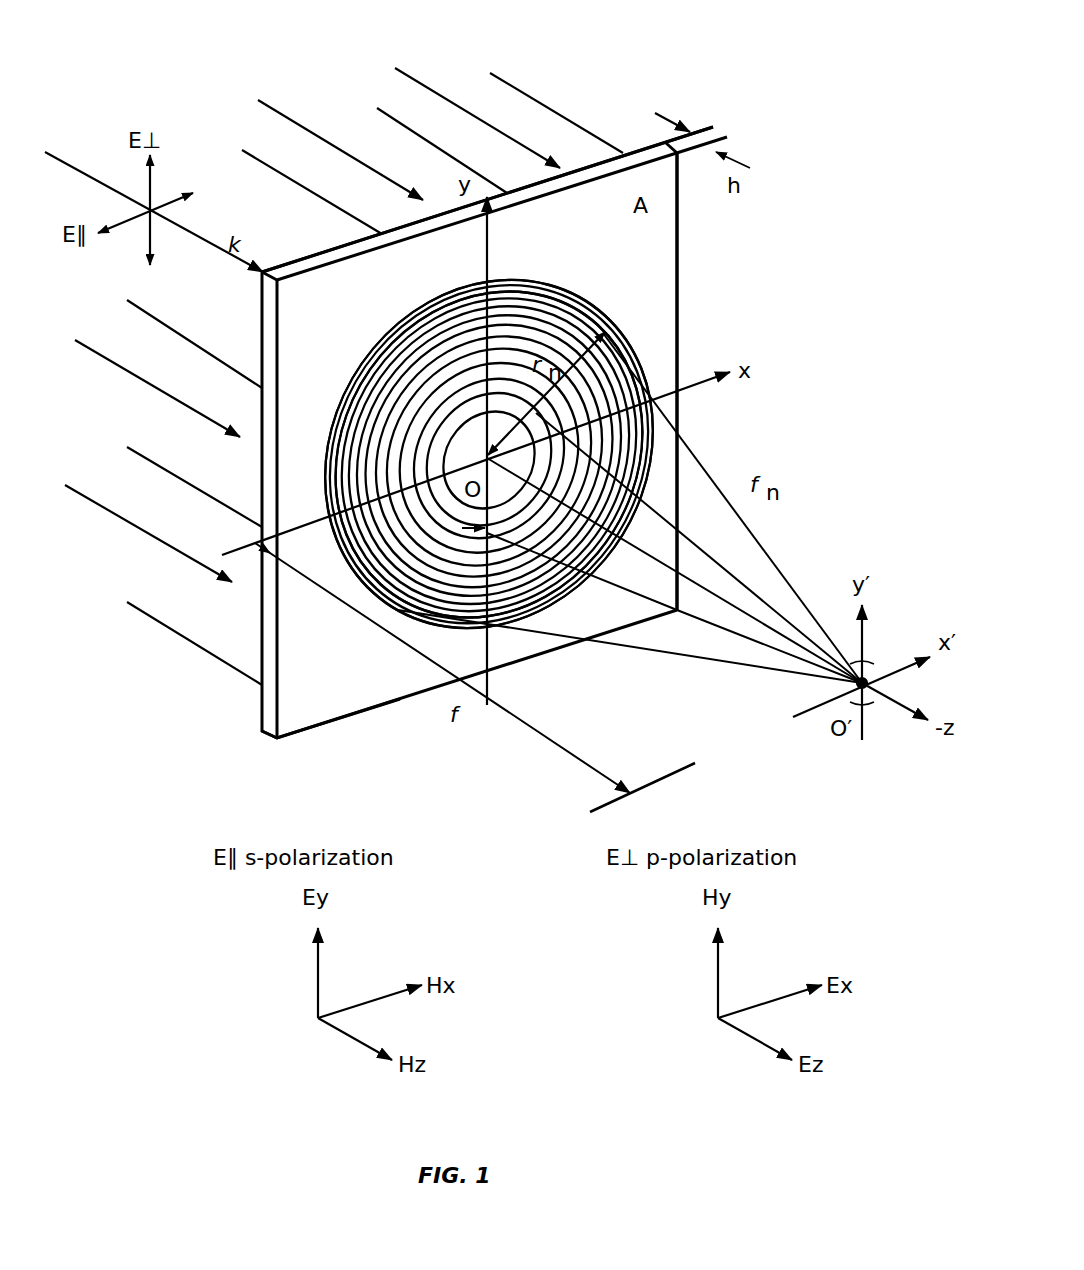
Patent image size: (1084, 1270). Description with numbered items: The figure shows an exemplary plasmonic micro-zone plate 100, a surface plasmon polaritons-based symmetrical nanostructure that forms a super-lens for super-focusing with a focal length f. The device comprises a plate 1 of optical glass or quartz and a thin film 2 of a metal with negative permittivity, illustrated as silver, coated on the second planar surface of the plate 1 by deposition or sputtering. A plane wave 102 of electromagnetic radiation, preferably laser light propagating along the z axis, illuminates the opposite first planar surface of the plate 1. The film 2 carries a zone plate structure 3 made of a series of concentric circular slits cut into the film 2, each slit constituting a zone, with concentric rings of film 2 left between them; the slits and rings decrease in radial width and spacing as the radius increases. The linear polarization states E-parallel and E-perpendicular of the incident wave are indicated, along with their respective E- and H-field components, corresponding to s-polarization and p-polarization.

The plasmonic micro-zone plate 100 is at (818, 153).
The plane wave 102 is at (437, 92).
The plate 1 is at (272, 706).
The thin film 2 is at (295, 718).
The zone plate structure 3 is at (587, 303).